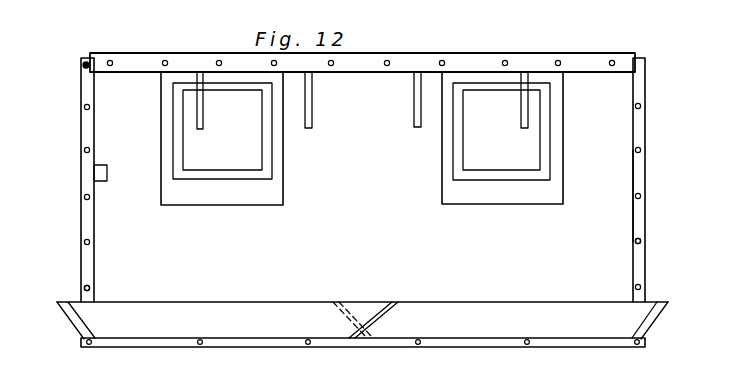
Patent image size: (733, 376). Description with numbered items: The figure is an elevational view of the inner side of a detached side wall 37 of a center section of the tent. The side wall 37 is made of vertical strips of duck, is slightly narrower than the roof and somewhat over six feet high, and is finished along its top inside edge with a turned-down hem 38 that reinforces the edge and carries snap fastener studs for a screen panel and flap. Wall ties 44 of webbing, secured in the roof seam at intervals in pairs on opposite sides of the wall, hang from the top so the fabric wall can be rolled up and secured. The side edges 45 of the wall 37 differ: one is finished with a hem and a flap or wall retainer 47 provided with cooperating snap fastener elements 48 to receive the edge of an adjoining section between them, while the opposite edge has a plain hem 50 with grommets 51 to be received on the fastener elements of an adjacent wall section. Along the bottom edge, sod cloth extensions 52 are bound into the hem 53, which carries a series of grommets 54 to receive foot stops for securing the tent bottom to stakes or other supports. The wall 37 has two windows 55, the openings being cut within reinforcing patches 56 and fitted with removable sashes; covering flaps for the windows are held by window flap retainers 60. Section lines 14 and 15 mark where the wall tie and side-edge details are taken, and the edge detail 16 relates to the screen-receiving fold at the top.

The section line 14- 14 is at (418, 30).
The section line 15- 15 is at (127, 197).
The hanger strips 16 is at (559, 48).
The side wall 37 is at (357, 236).
The hem 38 is at (598, 58).
The wall ties 44 is at (413, 129).
The side edges 45 is at (88, 135).
The wall retainer 47 is at (88, 219).
The snap fastener elements 48 is at (90, 287).
The plain hem 50 is at (638, 186).
The grommets 51 is at (641, 242).
The sod cloth extensions 52 is at (530, 312).
The hem 53 is at (440, 347).
The grommets 54 is at (526, 346).
The windows 55 is at (530, 158).
The reinforcing patches 56 is at (273, 193).
The window flap retainers 60 is at (268, 159).